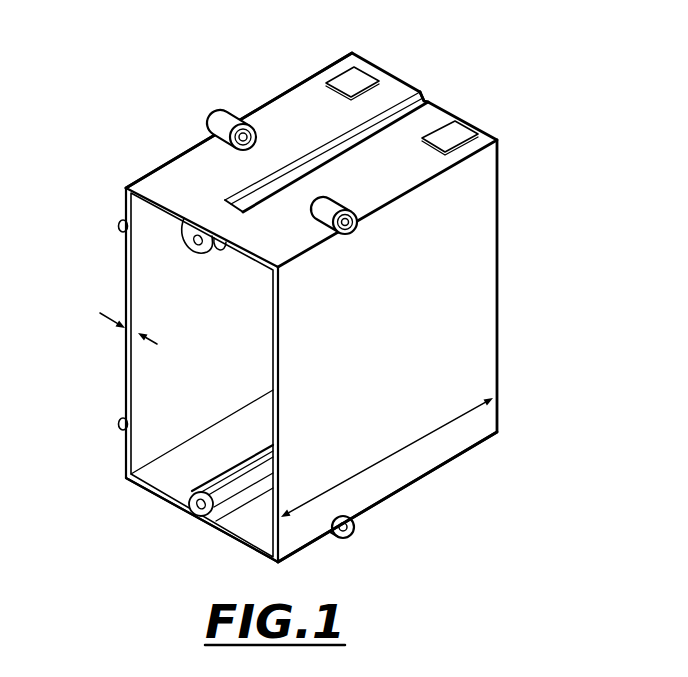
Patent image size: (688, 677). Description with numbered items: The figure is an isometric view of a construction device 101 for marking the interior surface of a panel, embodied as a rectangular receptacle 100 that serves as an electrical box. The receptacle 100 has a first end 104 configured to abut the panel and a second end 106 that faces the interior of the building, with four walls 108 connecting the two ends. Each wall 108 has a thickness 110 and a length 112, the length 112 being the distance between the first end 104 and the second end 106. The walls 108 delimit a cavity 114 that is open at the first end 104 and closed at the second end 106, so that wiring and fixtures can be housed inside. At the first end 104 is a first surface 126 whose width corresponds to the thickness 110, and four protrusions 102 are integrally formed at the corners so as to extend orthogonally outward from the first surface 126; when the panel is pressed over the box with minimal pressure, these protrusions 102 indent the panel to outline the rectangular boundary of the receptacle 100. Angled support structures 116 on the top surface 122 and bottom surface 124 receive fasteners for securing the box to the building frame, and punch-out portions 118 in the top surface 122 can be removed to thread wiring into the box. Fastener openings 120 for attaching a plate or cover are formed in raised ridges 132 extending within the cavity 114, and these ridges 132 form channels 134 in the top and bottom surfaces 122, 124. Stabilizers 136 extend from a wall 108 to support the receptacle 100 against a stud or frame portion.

The rectangular receptacle 100 is at (352, 52).
The construction device 101 is at (431, 57).
The protrusions 102 is at (128, 190).
The first end 104 is at (160, 376).
The second end 106 is at (511, 213).
The walls 108 is at (291, 116).
The thickness 110 is at (126, 342).
The length 112 is at (388, 457).
The cavity 114 is at (224, 354).
The support structures 116 is at (221, 120).
The punch-out portions 118 is at (357, 76).
The fastener openings 120 is at (198, 241).
The top surface 122 is at (170, 172).
The bottom surface 124 is at (431, 487).
The first surface 126 is at (147, 494).
The raised ridges 132 is at (221, 246).
The channels 134 is at (431, 88).
The stabilizers 136 is at (124, 229).